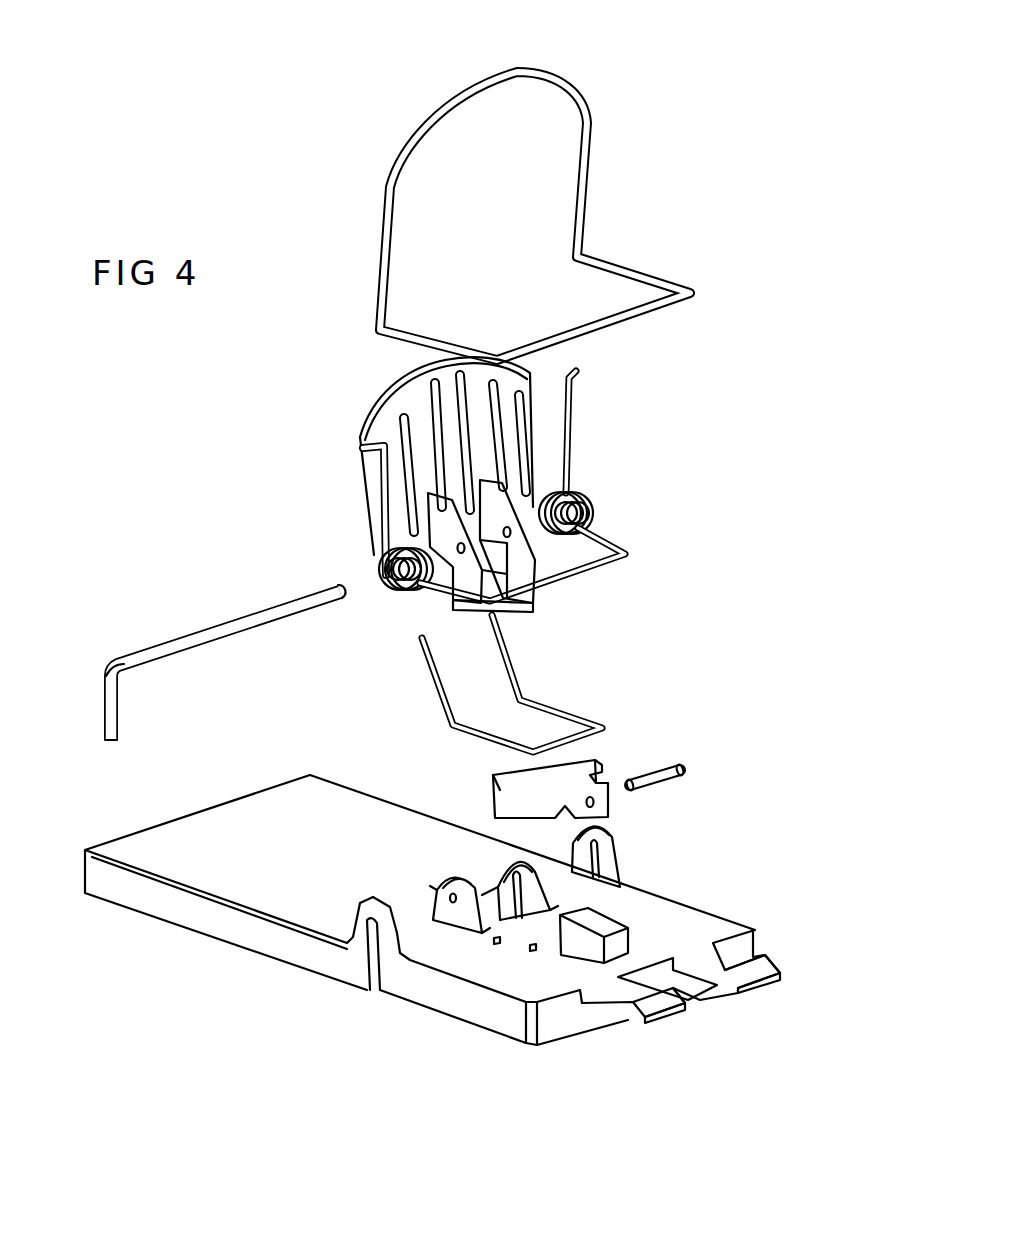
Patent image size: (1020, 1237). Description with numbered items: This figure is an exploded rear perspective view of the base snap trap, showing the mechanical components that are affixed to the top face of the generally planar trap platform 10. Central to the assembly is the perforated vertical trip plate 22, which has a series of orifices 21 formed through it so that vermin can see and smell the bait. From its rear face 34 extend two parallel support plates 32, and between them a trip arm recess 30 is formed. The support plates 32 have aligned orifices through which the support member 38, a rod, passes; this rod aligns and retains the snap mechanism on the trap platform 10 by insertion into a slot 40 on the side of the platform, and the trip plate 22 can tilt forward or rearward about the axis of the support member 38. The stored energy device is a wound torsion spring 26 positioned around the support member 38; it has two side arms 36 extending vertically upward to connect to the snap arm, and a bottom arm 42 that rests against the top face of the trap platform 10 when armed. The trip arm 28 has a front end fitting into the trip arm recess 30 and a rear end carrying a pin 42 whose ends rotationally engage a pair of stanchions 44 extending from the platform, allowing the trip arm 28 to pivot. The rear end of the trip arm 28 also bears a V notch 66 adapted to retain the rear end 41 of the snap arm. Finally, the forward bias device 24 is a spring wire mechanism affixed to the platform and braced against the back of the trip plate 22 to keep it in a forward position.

The trap platform 10 is at (147, 903).
The orifices 21 is at (511, 75).
The vertical trip plate 22 is at (380, 412).
The forward bias device 24 is at (510, 660).
The torsion spring 26 is at (588, 495).
The trip arm 28 is at (500, 780).
The trip arm recess 30 is at (573, 583).
The support plates 32 is at (405, 593).
The rear face 34 is at (533, 382).
The side arms 36 is at (570, 422).
The support member 38 is at (190, 640).
The slot 40 is at (380, 990).
The rear end of snap arm 41 is at (610, 317).
The bottom arm / pin 42 is at (615, 568).
The stanchions 44 is at (433, 862).
The V notch 66 is at (602, 773).